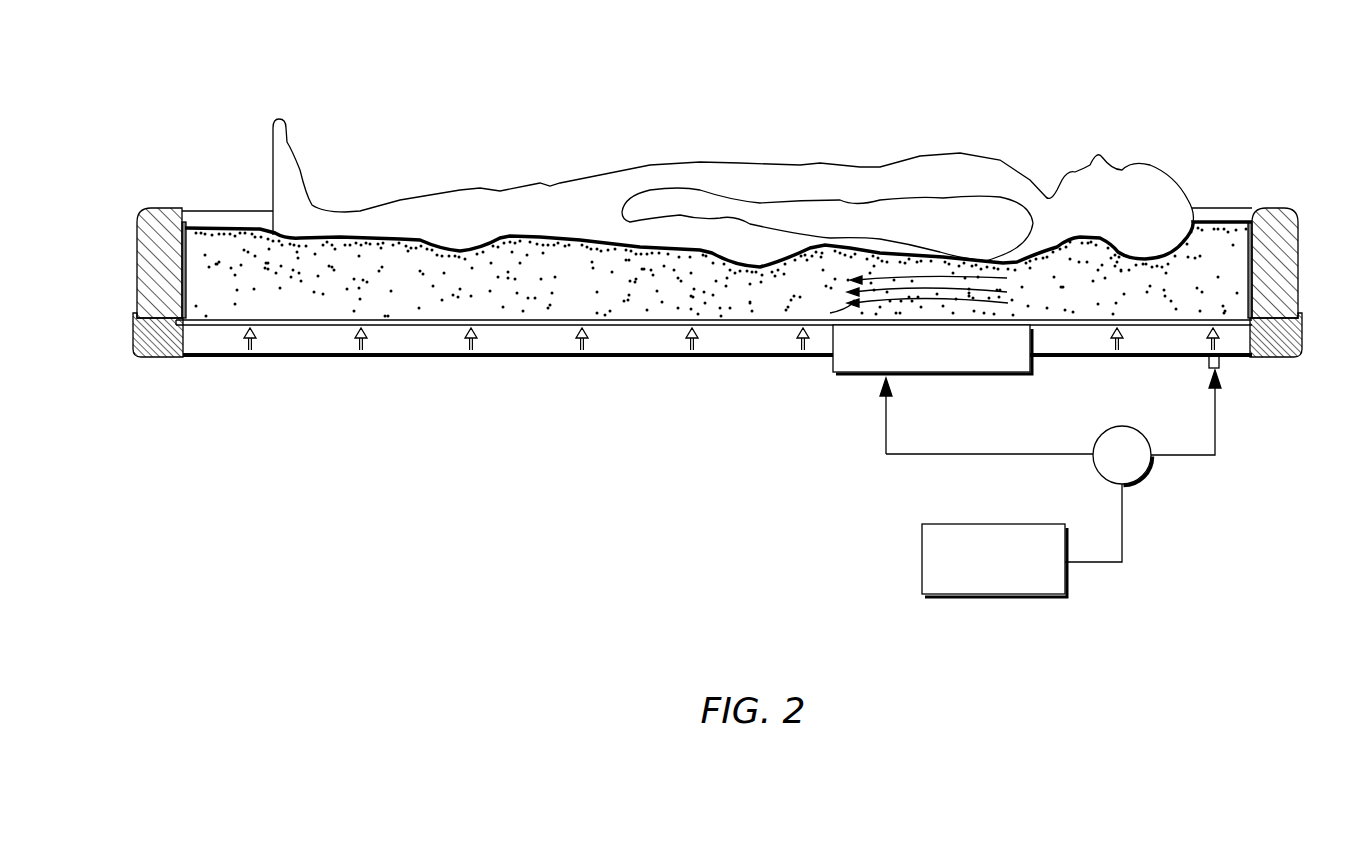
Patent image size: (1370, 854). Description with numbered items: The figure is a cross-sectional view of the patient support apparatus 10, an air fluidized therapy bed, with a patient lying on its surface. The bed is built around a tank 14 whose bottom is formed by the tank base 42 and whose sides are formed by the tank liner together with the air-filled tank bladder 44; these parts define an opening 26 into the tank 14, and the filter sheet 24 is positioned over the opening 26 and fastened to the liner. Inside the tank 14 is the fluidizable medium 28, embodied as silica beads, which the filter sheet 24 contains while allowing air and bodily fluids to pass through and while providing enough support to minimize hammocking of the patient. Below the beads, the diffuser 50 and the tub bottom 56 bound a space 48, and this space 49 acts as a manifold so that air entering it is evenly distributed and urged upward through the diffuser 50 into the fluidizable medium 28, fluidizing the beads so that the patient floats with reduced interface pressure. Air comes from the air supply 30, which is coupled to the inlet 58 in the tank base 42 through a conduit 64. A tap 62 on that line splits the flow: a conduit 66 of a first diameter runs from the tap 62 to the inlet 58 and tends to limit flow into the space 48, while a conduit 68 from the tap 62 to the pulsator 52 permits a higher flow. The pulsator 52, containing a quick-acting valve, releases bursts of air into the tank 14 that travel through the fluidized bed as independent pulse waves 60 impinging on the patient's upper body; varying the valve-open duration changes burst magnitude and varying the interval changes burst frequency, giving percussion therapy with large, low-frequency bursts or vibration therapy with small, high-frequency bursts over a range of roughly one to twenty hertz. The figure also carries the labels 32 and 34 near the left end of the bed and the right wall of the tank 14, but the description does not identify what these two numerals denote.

The patient support apparatus 10 is at (1240, 122).
The tank 14 is at (1306, 232).
The filter sheet 24 is at (232, 227).
The opening 26 is at (1212, 221).
The fluidizable medium 28 is at (332, 270).
The air supply 30 is at (922, 565).
The patient support region 32 is at (199, 181).
The side bolster 34 is at (1278, 176).
The tank base 42 is at (157, 357).
The tank bladder 44 is at (155, 262).
The space 48 is at (1200, 284).
The space 49 is at (307, 347).
The diffuser 50 is at (418, 325).
The pulsator 52 is at (1013, 373).
The tub bottom 56 is at (447, 357).
The inlet 58 is at (1222, 363).
The pulse waves 60 is at (830, 313).
The tap 62 is at (1170, 492).
The conduit 64 is at (1120, 555).
The conduit 66 is at (1215, 448).
The conduit 68 is at (985, 455).